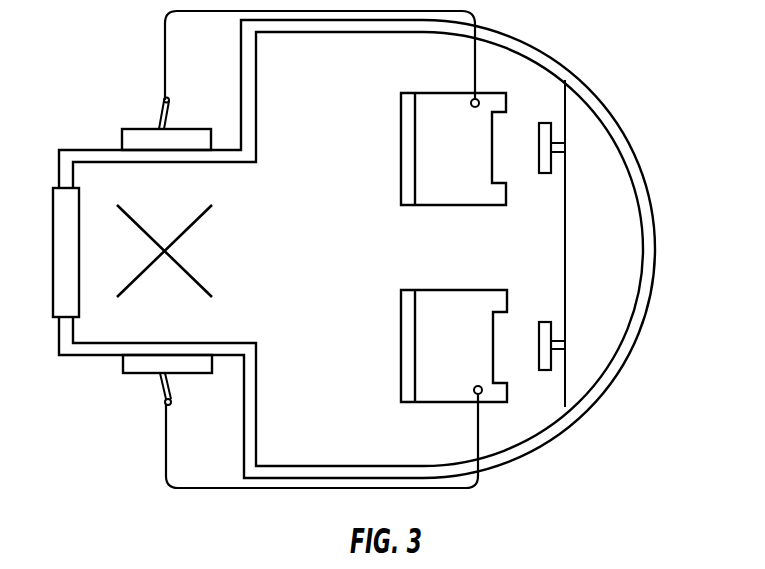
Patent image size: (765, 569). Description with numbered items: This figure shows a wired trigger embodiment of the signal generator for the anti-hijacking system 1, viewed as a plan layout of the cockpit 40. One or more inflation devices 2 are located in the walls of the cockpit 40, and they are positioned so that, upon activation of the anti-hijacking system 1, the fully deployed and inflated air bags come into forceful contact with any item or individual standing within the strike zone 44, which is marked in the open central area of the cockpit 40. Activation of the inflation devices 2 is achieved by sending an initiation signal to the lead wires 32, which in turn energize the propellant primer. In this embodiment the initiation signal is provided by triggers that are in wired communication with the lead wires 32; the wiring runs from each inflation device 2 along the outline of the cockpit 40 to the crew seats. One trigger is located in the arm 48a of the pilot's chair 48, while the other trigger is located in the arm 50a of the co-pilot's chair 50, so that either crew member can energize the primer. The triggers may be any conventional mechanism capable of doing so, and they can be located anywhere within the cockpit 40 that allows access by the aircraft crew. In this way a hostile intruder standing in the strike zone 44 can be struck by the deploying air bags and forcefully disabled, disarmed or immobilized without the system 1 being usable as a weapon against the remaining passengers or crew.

The anti-hijacking system 1 is at (594, 42).
The inflation device 2 is at (130, 128).
The lead wires 32 is at (160, 108).
The cockpit 40 is at (355, 255).
The strike zone 44 is at (187, 246).
The pilot's chair 48 is at (469, 361).
The arm of the pilot's chair 48a is at (477, 396).
The co-pilot's chair 50 is at (468, 163).
The arm of the co-pilot's chair 50a is at (475, 99).